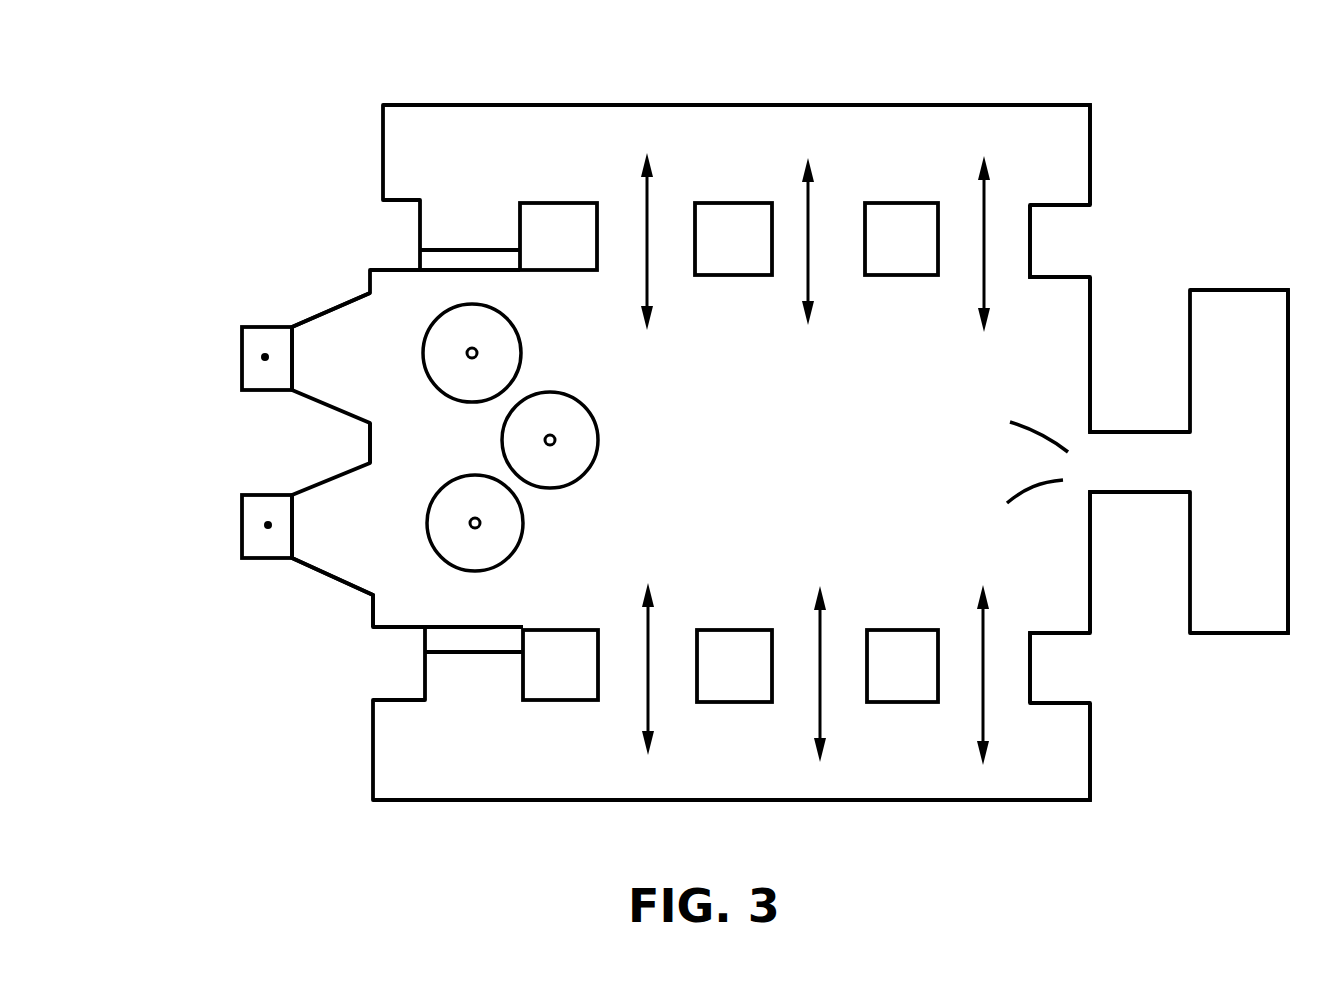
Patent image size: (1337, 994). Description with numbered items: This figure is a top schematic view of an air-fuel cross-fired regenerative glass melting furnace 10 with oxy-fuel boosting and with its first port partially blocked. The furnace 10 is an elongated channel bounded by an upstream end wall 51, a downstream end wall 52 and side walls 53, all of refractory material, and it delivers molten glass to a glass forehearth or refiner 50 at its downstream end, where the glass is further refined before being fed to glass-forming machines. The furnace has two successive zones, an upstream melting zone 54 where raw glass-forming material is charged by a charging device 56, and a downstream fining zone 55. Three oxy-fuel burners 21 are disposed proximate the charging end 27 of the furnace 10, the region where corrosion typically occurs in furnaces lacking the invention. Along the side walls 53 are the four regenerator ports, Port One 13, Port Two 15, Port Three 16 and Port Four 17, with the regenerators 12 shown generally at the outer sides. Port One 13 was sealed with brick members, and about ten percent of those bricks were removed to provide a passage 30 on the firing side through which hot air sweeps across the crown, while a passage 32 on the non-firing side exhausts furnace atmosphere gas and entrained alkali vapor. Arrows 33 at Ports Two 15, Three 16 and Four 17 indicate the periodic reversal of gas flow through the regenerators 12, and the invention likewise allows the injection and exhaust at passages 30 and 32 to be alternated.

The glass melting furnace 10 is at (316, 284).
The regenerators 12 is at (1080, 167).
The Port One 13 is at (468, 210).
The Port Two 15 is at (672, 217).
The Port Three 16 is at (833, 237).
The Port Four 17 is at (1007, 218).
The oxy-fuel burners 21 is at (476, 350).
The charging end 27 is at (390, 447).
The passage 30 is at (420, 255).
The passage 32 is at (425, 640).
The arrows 33 is at (650, 285).
The glass forehearth or refiner 50 is at (1268, 478).
The upstream end wall 51 is at (373, 610).
The downstream end wall 52 is at (1092, 298).
The side walls 53 is at (1070, 273).
The melting zone 54 is at (470, 462).
The fining zone 55 is at (995, 478).
The charging device 56 is at (240, 362).